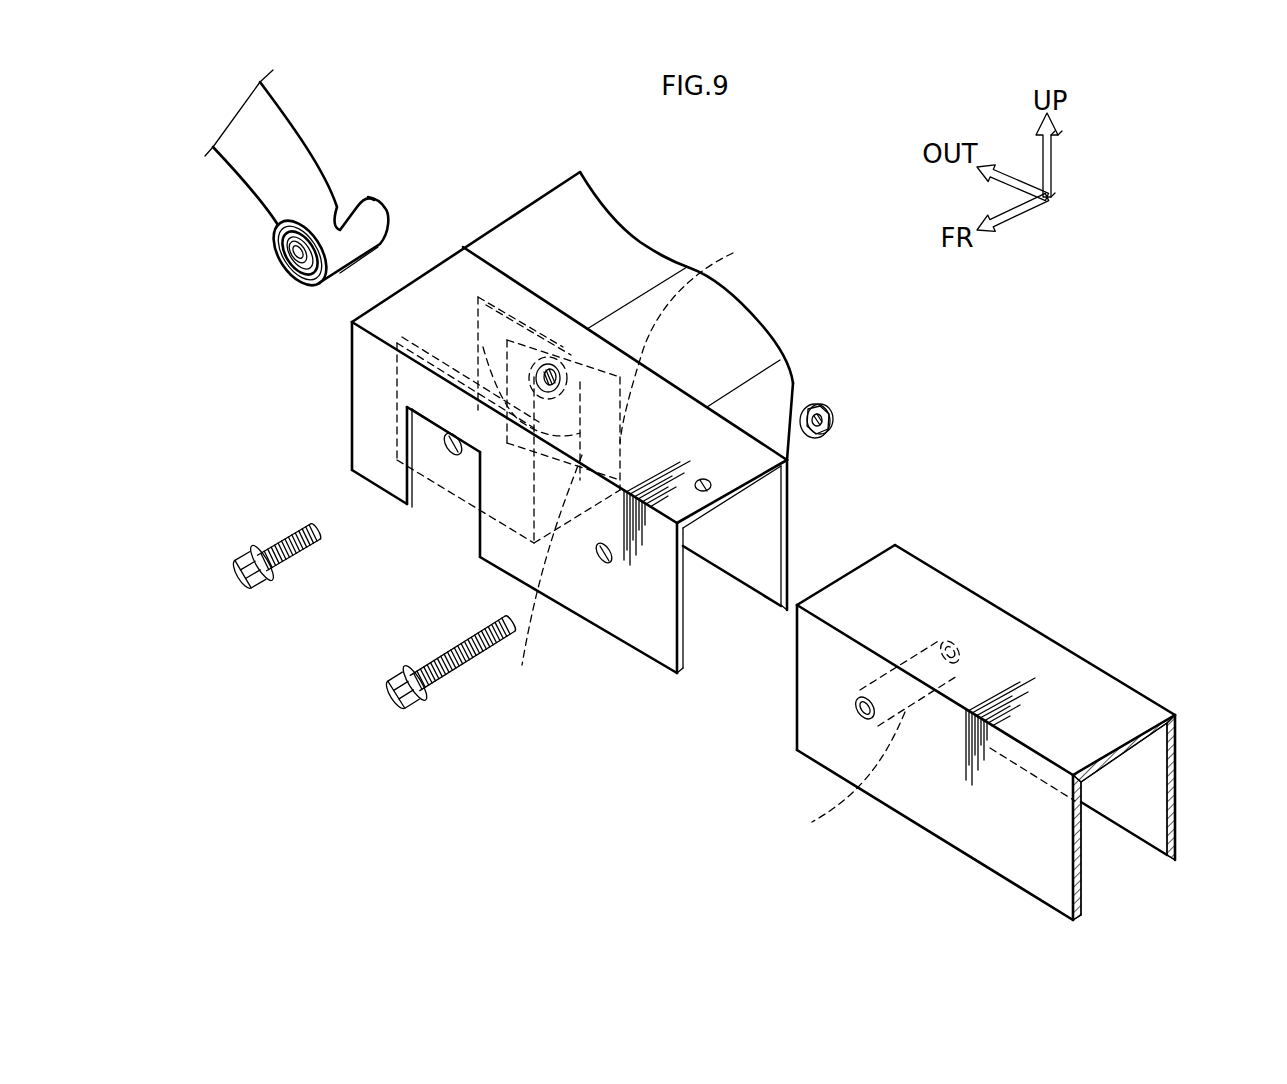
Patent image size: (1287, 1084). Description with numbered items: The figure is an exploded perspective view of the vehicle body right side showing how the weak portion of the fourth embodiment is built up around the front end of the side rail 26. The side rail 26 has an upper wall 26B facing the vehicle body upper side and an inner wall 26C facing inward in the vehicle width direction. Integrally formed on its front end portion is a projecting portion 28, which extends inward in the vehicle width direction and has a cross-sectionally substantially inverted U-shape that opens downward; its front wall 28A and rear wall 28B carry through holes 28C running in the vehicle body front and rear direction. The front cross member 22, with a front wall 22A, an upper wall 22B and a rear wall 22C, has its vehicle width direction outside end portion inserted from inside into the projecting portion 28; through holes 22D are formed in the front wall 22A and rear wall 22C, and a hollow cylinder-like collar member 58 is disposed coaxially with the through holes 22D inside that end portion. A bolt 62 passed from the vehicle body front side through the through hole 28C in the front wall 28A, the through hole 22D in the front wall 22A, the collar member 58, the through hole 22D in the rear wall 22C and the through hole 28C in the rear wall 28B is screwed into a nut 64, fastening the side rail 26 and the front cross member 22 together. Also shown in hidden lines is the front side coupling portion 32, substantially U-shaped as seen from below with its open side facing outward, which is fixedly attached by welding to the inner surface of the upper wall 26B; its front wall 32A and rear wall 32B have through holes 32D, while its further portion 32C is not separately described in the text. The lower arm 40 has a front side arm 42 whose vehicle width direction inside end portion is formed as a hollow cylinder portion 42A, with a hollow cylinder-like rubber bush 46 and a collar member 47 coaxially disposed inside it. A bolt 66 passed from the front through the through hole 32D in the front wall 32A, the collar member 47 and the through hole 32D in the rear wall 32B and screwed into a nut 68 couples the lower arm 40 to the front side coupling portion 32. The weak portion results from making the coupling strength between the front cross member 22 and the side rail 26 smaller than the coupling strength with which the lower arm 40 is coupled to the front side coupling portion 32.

The front cross member 22 is at (987, 731).
The front wall 22A is at (1023, 837).
The upper wall 22B is at (1103, 682).
The rear wall 22C is at (1143, 825).
The through holes 22D is at (975, 652).
The side rail 26 is at (687, 274).
The upper wall 26B is at (617, 252).
The inner wall 26C is at (752, 335).
The projecting portion 28 is at (611, 430).
The front wall 28A is at (587, 598).
The rear wall 28B is at (740, 578).
The through holes 28C is at (611, 560).
The front side coupling portion 32 is at (563, 418).
The front wall 32A is at (467, 493).
The rear wall 32B is at (638, 340).
The curved flange of clamp 32C is at (536, 571).
The through holes 32D is at (479, 300).
The lower arm 40 is at (323, 206).
The front side arm 42 is at (323, 230).
The hollow cylinder portion 42A is at (360, 262).
The rubber bush 46 is at (313, 283).
The collar member 47 is at (290, 265).
The collar member 58 is at (903, 817).
The bolt 62 is at (395, 698).
The nut 64 is at (835, 426).
The bolt 66 is at (233, 588).
The nut 68 is at (560, 362).